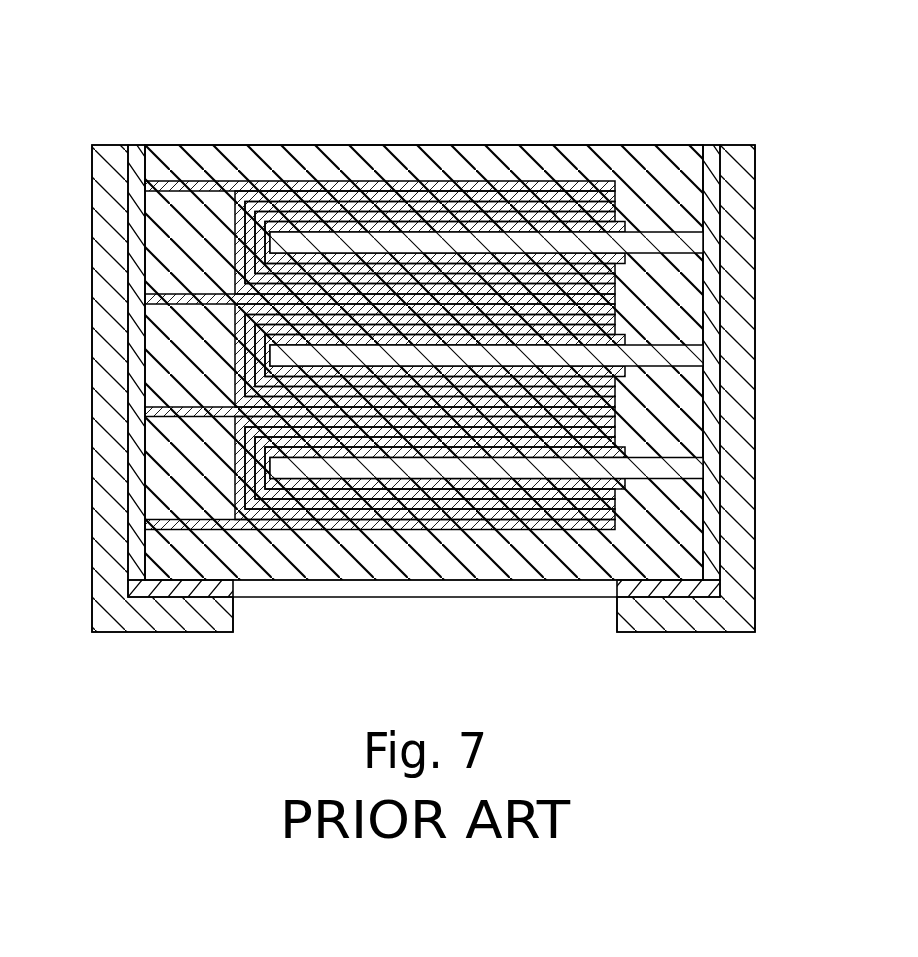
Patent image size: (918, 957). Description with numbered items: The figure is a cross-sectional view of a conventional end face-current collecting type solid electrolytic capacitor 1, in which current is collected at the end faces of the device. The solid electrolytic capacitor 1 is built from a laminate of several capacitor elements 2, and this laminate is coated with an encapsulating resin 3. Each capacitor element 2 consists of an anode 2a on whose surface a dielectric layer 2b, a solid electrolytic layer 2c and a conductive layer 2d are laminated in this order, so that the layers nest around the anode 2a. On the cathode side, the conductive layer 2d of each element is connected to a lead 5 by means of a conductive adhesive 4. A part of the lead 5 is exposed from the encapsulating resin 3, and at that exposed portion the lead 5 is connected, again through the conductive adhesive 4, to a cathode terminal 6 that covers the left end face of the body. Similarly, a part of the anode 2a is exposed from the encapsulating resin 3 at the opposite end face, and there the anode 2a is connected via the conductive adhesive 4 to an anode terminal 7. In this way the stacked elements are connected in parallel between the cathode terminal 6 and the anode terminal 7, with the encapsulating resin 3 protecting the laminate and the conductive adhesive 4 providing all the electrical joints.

The solid electrolytic capacitor 1 is at (88, 92).
The capacitor element 2 is at (469, 276).
The anode 2a is at (292, 80).
The dielectric layer 2b is at (386, 218).
The solid electrolytic layer 2c is at (344, 207).
The conductive layer 2d is at (301, 197).
The encapsulating resin 3 is at (580, 145).
The conductive adhesive 4 is at (134, 145).
The lead 5 is at (210, 181).
The cathode terminal 6 is at (92, 352).
The anode terminal 7 is at (756, 352).